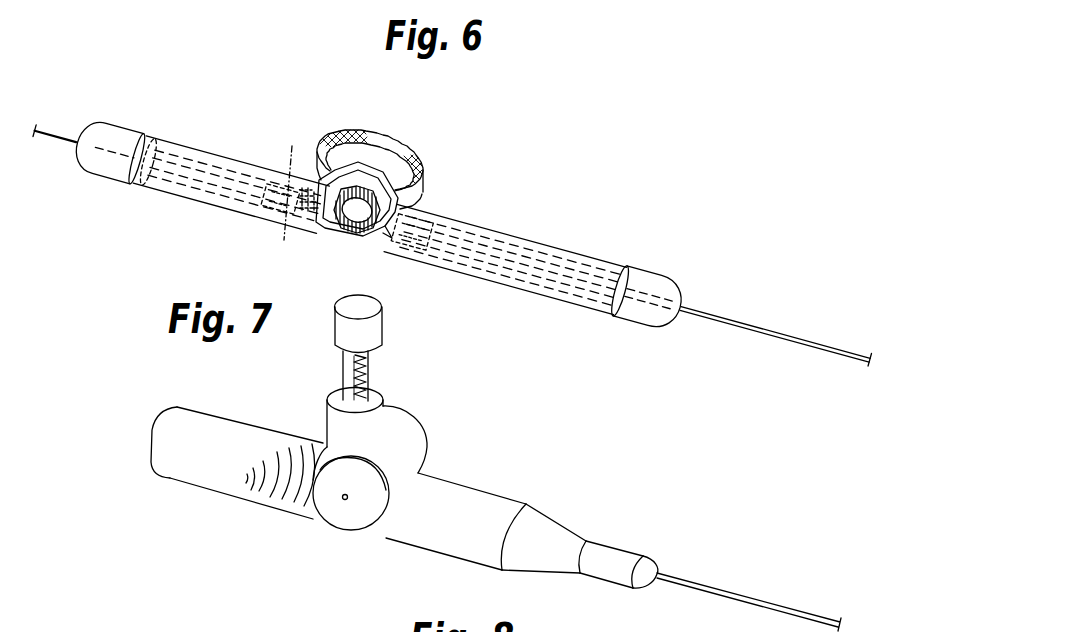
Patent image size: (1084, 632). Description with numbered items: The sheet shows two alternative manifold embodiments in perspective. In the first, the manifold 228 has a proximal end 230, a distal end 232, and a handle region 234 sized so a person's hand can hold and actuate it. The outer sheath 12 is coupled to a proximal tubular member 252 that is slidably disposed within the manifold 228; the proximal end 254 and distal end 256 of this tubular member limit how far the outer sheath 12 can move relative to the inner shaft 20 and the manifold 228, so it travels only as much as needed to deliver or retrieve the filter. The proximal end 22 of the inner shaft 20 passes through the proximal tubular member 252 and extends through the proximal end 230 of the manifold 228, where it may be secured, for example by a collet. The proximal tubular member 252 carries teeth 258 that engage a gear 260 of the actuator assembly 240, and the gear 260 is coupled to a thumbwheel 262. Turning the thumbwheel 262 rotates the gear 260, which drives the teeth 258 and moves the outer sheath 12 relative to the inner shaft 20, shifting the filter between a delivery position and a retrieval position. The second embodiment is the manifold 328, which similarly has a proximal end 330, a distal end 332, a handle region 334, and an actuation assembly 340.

In FIG. 6, the outer sheath 12 is at (752, 330).
In FIG. 6, the inner shaft 20 is at (160, 168).
In FIG. 6, the proximal end 22 is at (55, 138).
In FIG. 6, the manifold 228 is at (219, 143).
In FIG. 6, the proximal end 230 is at (97, 130).
In FIG. 6, the distal end 232 is at (645, 284).
In FIG. 6, the handle region 234 is at (480, 227).
In FIG. 6, the actuator assembly 240 is at (411, 144).
In FIG. 6, the proximal tubular member 252 is at (284, 222).
In FIG. 6, the proximal end 254 is at (242, 214).
In FIG. 6, the distal end 256 is at (412, 249).
In FIG. 6, the teeth 258 is at (293, 150).
In FIG. 6, the gear 260 is at (417, 177).
In FIG. 6, the thumbwheel 262 is at (353, 137).
In FIG. 7, the manifold 328 is at (271, 427).
In FIG. 7, the proximal end 330 is at (174, 464).
In FIG. 7, the distal end 332 is at (610, 553).
In FIG. 7, the handle region 334 is at (266, 498).
In FIG. 7, the actuation assembly 340 is at (407, 428).